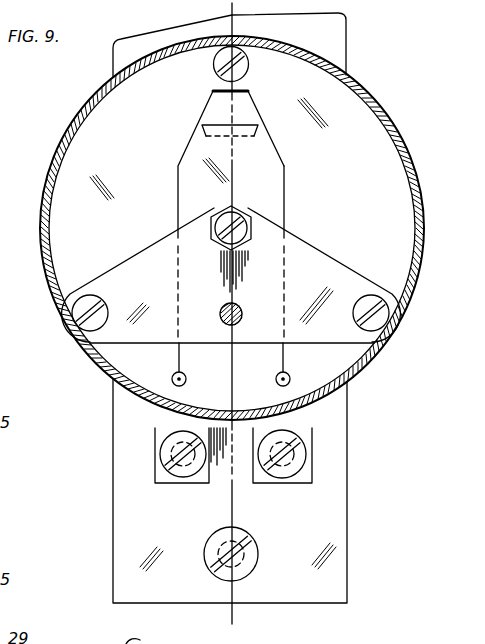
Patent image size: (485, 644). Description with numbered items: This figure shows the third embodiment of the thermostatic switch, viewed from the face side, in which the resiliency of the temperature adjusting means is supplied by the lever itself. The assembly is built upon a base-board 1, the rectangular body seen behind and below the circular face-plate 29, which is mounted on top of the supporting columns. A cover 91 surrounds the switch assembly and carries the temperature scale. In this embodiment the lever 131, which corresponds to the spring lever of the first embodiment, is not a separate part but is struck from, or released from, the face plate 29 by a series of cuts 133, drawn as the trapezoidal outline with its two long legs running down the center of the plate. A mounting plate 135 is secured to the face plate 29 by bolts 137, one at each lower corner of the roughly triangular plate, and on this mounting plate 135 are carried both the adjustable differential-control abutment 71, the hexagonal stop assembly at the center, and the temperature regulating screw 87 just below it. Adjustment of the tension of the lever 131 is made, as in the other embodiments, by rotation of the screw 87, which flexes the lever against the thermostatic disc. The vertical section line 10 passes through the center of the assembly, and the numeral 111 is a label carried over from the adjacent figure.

The base-board 1 is at (347, 474).
The section line 10 is at (250, 18).
The circular face-plate 29 is at (353, 138).
The stop assembly 71 is at (232, 214).
The temperature regulating screw 87 is at (222, 310).
The cover 91 is at (44, 256).
The member 111 is at (0, 471).
The lever 131 is at (270, 193).
The cuts 133 is at (186, 150).
The mounting plate 135 is at (350, 288).
The bolts 137 is at (73, 313).